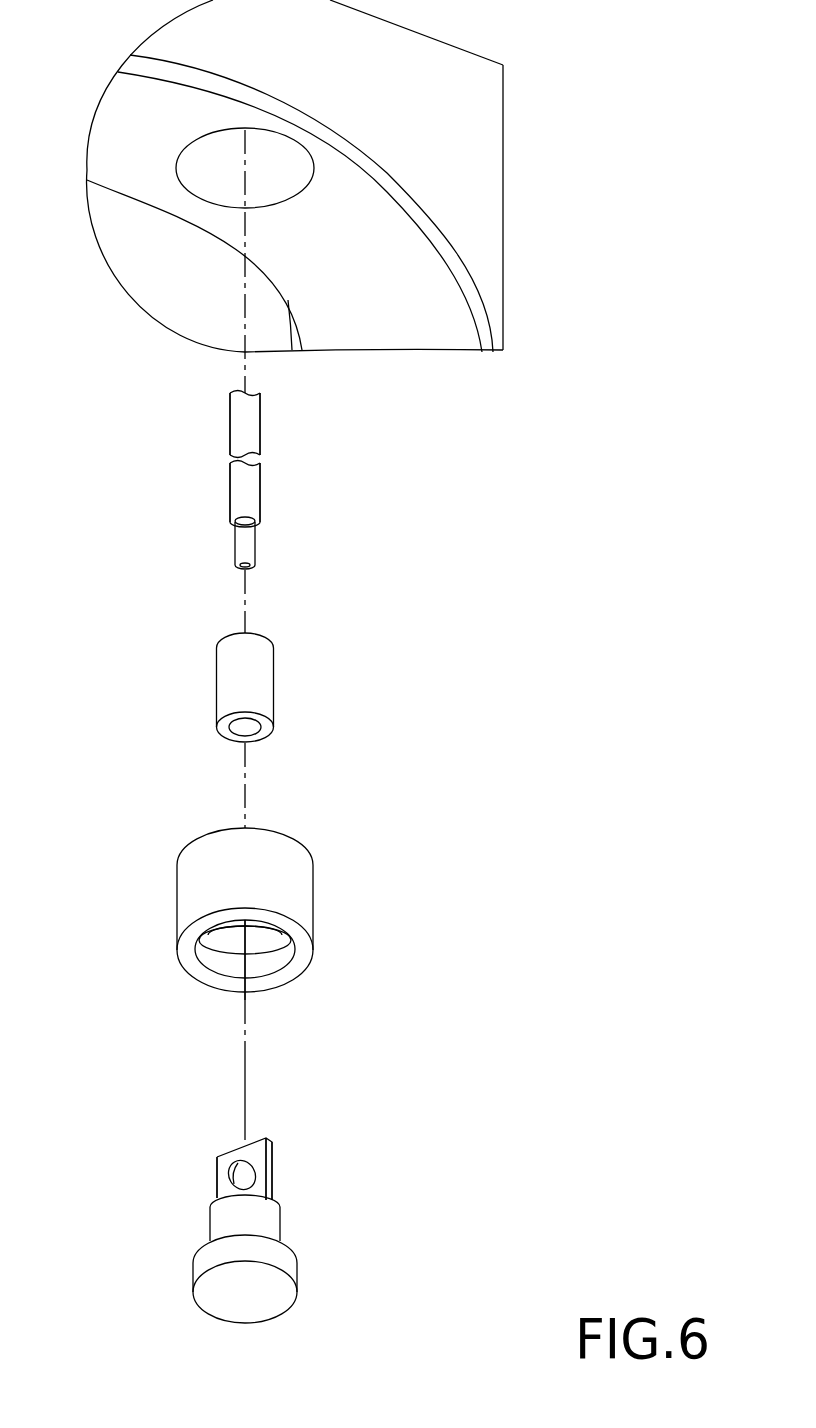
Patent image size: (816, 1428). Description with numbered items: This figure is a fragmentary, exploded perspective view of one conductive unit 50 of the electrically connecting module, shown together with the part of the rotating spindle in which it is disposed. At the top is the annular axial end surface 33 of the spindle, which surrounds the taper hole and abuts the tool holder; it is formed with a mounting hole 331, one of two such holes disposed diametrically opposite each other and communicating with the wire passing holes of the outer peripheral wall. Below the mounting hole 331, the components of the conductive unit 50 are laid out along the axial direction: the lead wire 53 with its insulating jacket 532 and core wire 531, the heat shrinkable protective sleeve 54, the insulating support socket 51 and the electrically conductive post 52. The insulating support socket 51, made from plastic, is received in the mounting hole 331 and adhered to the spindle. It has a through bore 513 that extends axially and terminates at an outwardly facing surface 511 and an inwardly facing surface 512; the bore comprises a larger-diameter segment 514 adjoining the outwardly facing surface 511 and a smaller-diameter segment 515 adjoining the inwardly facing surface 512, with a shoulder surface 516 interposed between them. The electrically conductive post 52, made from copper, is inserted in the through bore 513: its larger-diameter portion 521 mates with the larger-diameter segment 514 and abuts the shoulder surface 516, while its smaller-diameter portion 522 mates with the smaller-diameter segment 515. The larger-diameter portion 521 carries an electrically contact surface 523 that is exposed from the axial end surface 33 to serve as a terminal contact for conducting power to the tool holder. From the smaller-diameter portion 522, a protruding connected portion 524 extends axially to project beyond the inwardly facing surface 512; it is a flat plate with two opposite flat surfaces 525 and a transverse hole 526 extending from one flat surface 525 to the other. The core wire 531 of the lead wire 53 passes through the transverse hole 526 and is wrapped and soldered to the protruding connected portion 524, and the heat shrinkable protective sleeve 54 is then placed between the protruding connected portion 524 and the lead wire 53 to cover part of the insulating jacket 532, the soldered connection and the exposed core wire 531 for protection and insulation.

The axial end surface 33 is at (392, 287).
The mounting hole 331 is at (276, 162).
The conductive unit 50 is at (210, 406).
The lead wire 53 is at (212, 448).
The insulating jacket 532 is at (230, 493).
The core wire 531 is at (242, 547).
The heat shrinkable protective sleeve 54 is at (232, 685).
The insulating support socket 51 is at (149, 871).
The inwardly facing surface 512 is at (223, 828).
The outwardly facing surface 511 is at (195, 965).
The through bore 513 is at (281, 957).
The larger-diameter segment 514 is at (228, 962).
The smaller-diameter segment 515 is at (225, 933).
The shoulder surface 516 is at (277, 937).
The electrically conductive post 52 is at (293, 1135).
The protruding connected portion 524 is at (233, 1148).
The flat surfaces 525 is at (257, 1188).
The transverse hole 526 is at (234, 1174).
The smaller-diameter portion 522 is at (272, 1227).
The larger-diameter portion 521 is at (288, 1268).
The electrically contact surface 523 is at (265, 1302).